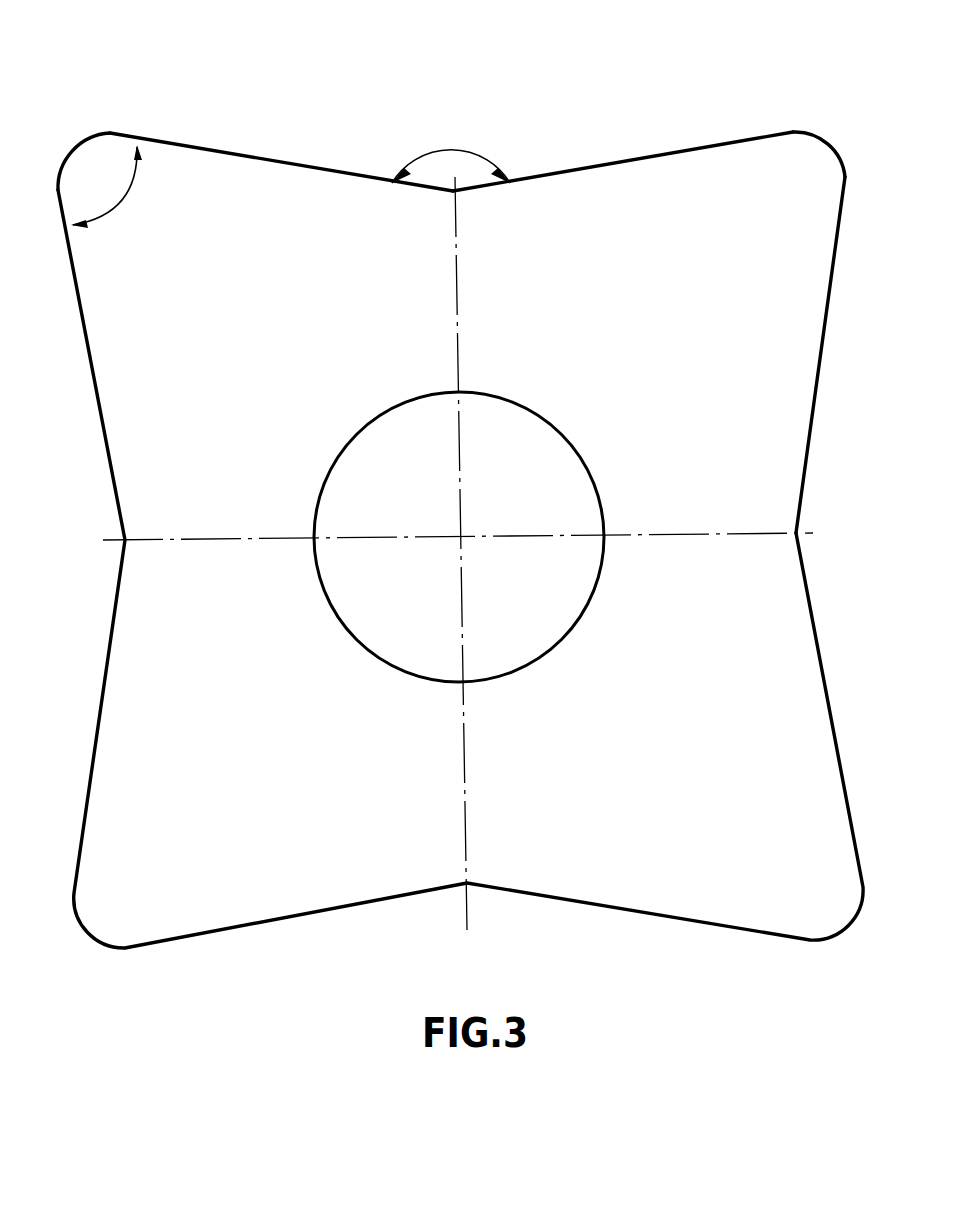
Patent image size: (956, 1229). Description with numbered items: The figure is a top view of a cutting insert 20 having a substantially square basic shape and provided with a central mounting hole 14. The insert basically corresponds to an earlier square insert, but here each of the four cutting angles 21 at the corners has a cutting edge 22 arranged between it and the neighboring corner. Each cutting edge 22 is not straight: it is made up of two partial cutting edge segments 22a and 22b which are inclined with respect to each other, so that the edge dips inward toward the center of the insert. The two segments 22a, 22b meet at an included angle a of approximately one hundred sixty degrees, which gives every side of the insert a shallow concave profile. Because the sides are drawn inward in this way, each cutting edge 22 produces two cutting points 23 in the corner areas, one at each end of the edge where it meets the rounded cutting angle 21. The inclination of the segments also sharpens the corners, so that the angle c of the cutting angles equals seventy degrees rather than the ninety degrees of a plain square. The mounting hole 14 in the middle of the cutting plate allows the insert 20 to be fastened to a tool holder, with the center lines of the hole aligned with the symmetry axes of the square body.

The mounting hole 14 is at (525, 489).
The cutting insert 20 is at (692, 193).
The cutting angle 21 is at (825, 140).
The cutting edge 22 is at (451, 105).
The partial cutting edge segment 22a is at (313, 172).
The partial cutting edge segment 22b is at (575, 170).
The cutting point 23 is at (90, 122).
The angle between partial cutting edge segments a is at (452, 148).
The angle of the cutting angles c is at (121, 202).